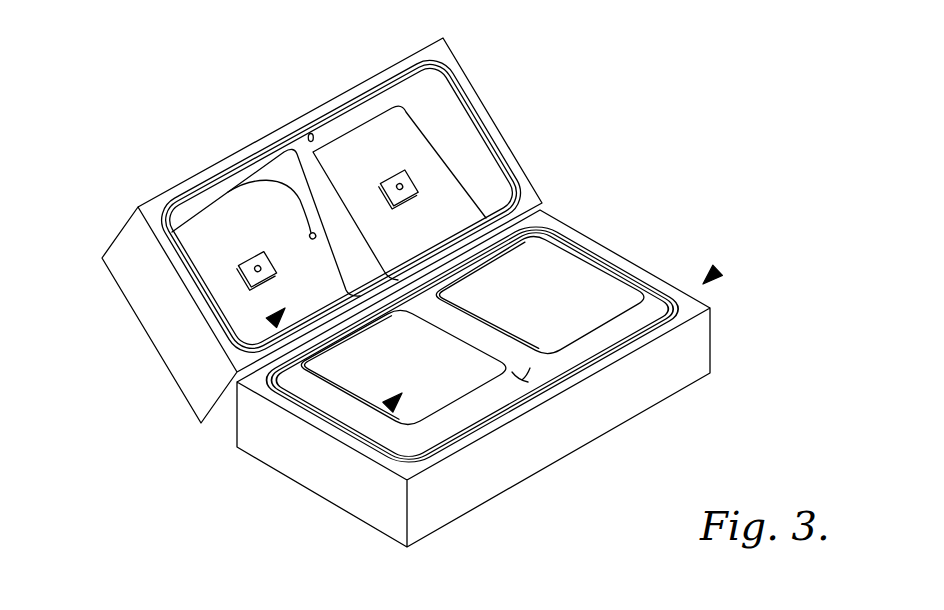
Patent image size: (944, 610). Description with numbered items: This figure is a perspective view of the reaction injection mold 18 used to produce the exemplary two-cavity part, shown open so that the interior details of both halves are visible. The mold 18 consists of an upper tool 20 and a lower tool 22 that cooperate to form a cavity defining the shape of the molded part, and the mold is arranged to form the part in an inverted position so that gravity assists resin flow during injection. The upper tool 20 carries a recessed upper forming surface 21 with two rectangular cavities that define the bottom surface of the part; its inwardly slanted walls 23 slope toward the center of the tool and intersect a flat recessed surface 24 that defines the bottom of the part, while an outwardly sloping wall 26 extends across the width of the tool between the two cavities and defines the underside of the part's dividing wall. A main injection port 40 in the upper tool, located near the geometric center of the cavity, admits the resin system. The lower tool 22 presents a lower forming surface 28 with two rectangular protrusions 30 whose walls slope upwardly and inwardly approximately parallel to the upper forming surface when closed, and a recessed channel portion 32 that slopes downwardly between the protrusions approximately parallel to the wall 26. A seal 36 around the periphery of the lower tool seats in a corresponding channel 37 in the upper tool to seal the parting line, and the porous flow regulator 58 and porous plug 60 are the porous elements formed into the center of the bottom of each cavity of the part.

The mold 18 is at (720, 268).
The upper tool 20 is at (138, 288).
The recessed upper forming surface 21 is at (270, 322).
The lower tool 22 is at (703, 348).
The inwardly slanted walls 23 is at (467, 160).
The flat recessed surface 24 is at (218, 181).
The outwardly sloping wall 26 is at (309, 135).
The lower forming surface 28 is at (386, 409).
The rectangular protrusions 30 is at (577, 293).
The recessed channel portion 32 is at (525, 380).
The seal 36 is at (308, 420).
The channel 37 is at (172, 195).
The main injection port 40 is at (250, 257).
The porous flow regulator 58 is at (218, 222).
The porous plug 60 is at (245, 283).